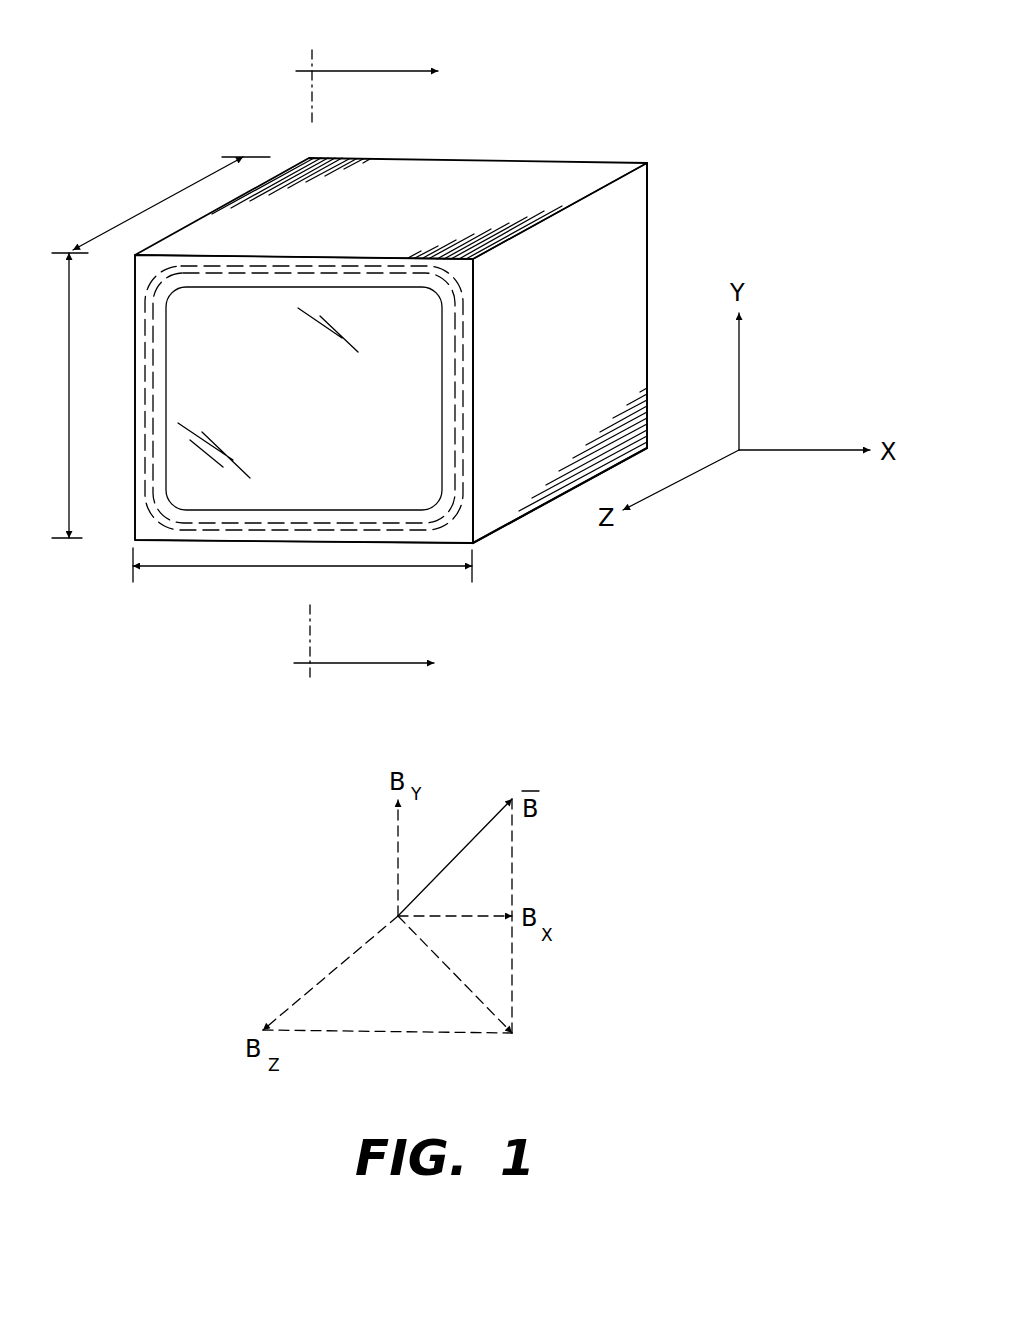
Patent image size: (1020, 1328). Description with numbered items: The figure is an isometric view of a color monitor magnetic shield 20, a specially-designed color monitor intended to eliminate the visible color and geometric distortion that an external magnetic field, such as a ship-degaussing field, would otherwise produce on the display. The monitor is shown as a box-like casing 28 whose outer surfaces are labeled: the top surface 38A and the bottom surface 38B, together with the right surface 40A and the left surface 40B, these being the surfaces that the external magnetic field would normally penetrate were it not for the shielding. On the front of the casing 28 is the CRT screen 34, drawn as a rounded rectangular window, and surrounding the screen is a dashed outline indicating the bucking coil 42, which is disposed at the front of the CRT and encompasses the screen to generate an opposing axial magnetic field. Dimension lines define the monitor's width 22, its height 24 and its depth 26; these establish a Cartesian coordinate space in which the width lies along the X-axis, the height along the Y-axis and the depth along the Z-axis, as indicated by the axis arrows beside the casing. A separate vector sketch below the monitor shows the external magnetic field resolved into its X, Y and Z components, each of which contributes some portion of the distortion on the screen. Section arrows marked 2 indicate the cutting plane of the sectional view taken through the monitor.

The color monitor magnetic shield 20 is at (560, 82).
The width 22 is at (250, 566).
The height 24 is at (68, 437).
The depth 26 is at (175, 193).
The casing 28 is at (648, 193).
The CRT screen 34 is at (380, 372).
The top surface 38A is at (553, 178).
The bottom surface 38B is at (516, 520).
The right surface 40A is at (623, 265).
The left surface 40B is at (133, 366).
The bucking coil 42 is at (462, 334).
The section line 2- 2 is at (382, 367).